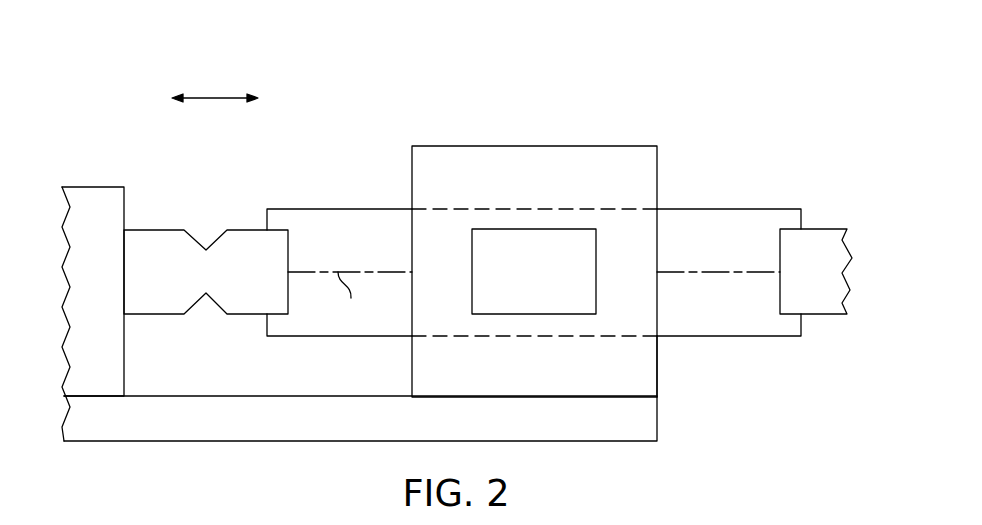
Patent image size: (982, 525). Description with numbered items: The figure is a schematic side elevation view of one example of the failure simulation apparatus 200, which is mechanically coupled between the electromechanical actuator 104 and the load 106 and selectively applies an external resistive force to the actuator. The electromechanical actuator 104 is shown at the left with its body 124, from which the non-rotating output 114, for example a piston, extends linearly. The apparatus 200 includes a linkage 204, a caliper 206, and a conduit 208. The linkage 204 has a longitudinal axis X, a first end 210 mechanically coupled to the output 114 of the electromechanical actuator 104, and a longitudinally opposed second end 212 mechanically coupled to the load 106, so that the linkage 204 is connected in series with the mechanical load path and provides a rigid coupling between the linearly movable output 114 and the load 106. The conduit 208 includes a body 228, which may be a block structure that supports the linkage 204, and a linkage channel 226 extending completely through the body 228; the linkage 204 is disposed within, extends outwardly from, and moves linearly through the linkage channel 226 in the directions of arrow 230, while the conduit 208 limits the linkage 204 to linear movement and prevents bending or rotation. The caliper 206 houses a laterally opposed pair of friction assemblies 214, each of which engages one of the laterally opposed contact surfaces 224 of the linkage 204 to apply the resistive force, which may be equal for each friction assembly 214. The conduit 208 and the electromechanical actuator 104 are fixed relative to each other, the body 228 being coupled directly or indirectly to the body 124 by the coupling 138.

The failure simulation apparatus 200 is at (688, 97).
The electromechanical actuator 104 is at (100, 155).
The body 124 is at (124, 213).
The output 114 is at (163, 314).
The coupling 138 is at (657, 427).
The arrow 230 is at (215, 99).
The first end 210 is at (260, 205).
The linkage 204 is at (347, 209).
The caliper 206 is at (673, 182).
The conduit 208 is at (442, 146).
The linkage channel 226 is at (585, 209).
The body 228 is at (657, 373).
The contact surfaces 224 is at (462, 268).
The friction assemblies 214 is at (561, 314).
The second end 212 is at (805, 207).
The load 106 is at (830, 314).